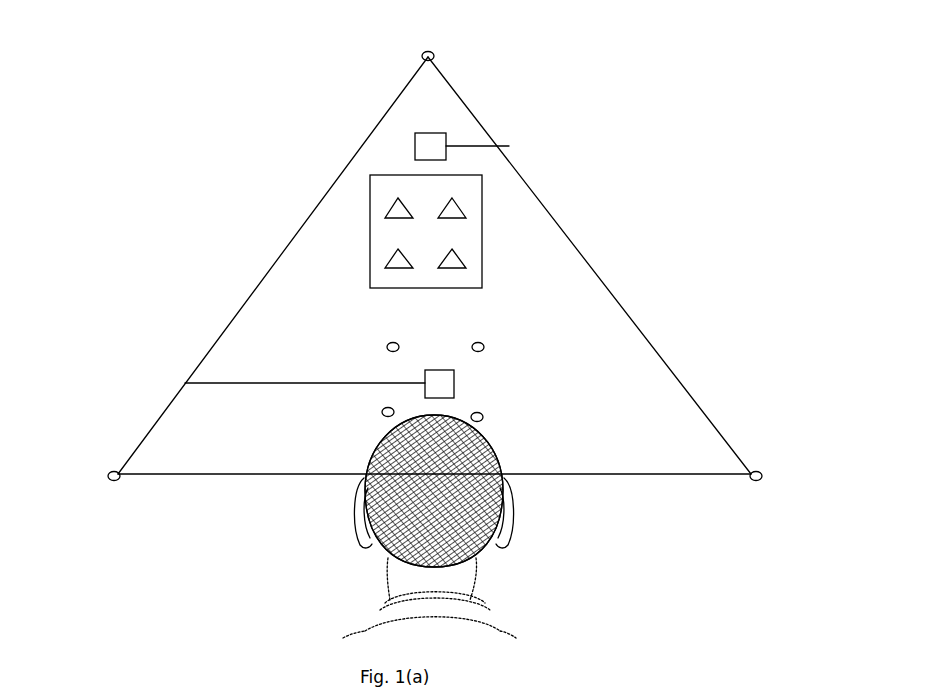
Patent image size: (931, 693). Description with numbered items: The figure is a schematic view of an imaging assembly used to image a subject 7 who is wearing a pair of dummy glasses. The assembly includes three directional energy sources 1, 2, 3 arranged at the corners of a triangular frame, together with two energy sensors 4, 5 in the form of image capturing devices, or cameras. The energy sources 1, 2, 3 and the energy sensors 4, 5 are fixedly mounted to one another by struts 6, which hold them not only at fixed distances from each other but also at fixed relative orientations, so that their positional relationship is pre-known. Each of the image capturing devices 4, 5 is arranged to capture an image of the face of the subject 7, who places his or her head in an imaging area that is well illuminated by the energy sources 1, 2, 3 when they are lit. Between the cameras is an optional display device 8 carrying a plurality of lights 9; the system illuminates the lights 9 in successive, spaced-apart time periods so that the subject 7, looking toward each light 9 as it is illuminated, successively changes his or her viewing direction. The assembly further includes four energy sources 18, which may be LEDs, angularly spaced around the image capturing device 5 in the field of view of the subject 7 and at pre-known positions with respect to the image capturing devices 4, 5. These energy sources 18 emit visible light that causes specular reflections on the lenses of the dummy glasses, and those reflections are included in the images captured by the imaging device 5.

The directional energy source 1 is at (421, 57).
The directional energy source 2 is at (108, 473).
The directional energy source 3 is at (763, 478).
The energy sensor 4 is at (415, 145).
The energy sensor 5 is at (458, 387).
The struts 6 is at (471, 146).
The subject 7 is at (343, 529).
The display device 8 is at (468, 288).
The lights 9 is at (460, 213).
The energy sources 18 is at (482, 351).